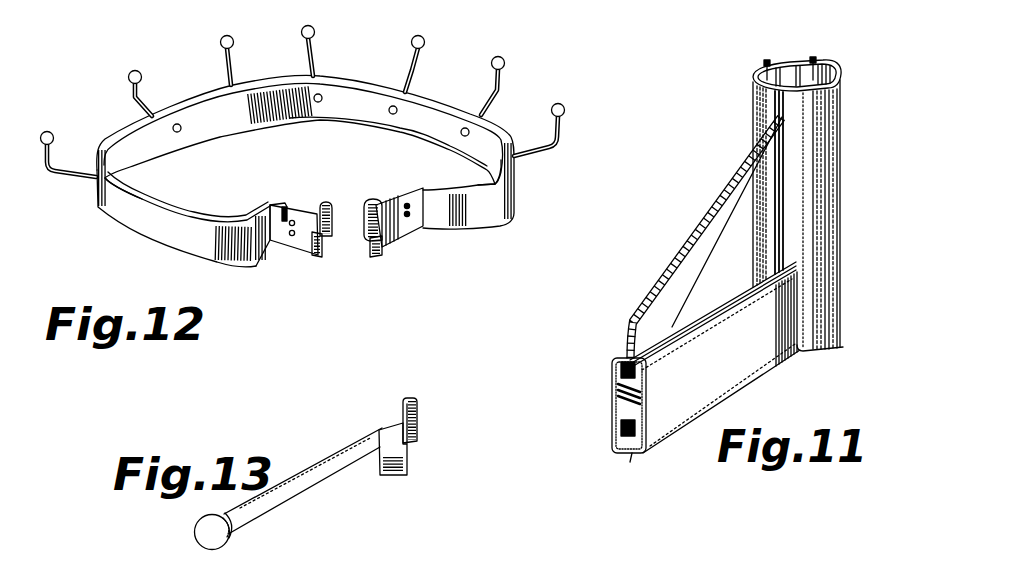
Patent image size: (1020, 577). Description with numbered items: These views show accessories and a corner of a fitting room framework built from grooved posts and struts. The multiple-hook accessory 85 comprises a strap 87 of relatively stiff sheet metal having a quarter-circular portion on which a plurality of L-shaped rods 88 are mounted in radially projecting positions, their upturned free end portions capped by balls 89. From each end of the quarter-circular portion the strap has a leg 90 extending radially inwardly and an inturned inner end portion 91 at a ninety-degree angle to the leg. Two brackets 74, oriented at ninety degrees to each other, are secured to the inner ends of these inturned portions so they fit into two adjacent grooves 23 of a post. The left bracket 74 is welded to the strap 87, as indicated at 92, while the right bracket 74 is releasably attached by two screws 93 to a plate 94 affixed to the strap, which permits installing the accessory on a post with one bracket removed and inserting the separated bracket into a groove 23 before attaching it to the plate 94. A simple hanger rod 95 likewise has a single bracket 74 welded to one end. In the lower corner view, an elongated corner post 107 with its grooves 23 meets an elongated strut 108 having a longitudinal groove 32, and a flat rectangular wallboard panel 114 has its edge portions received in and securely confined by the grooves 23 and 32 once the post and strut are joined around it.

In FIG. 11, the groove 23 is at (817, 60).
In FIG. 11, the longitudinal groove 32 is at (612, 376).
In FIG. 12, the bracket 74 is at (310, 272).
In FIG. 13, the bracket 74 is at (428, 416).
In FIG. 12, the multiple-hook accessory 85 is at (175, 219).
In FIG. 12, the strap 87 is at (299, 110).
In FIG. 12, the L-shaped rods 88 is at (66, 165).
In FIG. 12, the balls 89 is at (45, 132).
In FIG. 12, the leg 90 is at (125, 198).
In FIG. 12, the inturned inner end portion 91 is at (252, 260).
In FIG. 12, the weld 92 is at (283, 208).
In FIG. 12, the screws 93 is at (409, 202).
In FIG. 12, the plate 94 is at (405, 230).
In FIG. 13, the hanger rod 95 is at (296, 494).
In FIG. 11, the corner post 107 is at (842, 149).
In FIG. 11, the strut 108 is at (746, 373).
In FIG. 11, the wallboard panel 114 is at (692, 238).